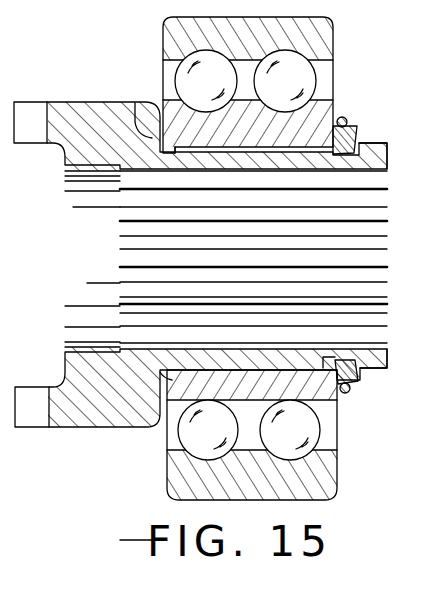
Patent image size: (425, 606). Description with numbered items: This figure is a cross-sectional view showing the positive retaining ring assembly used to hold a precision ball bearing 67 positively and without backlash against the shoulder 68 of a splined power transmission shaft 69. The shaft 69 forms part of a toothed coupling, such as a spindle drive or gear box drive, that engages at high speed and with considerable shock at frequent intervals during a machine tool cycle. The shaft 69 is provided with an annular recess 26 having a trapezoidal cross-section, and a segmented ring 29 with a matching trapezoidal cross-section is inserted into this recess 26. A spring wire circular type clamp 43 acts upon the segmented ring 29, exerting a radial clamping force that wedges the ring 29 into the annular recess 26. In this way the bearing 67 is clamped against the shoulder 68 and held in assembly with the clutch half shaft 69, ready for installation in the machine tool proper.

The annular recess 26 is at (362, 152).
The segmented ring 29 is at (359, 128).
The spring wire clamp 43 is at (343, 117).
The precision ball bearing 67 is at (330, 33).
The shoulder 68 is at (135, 100).
The splined power transmission shaft 69 is at (68, 100).